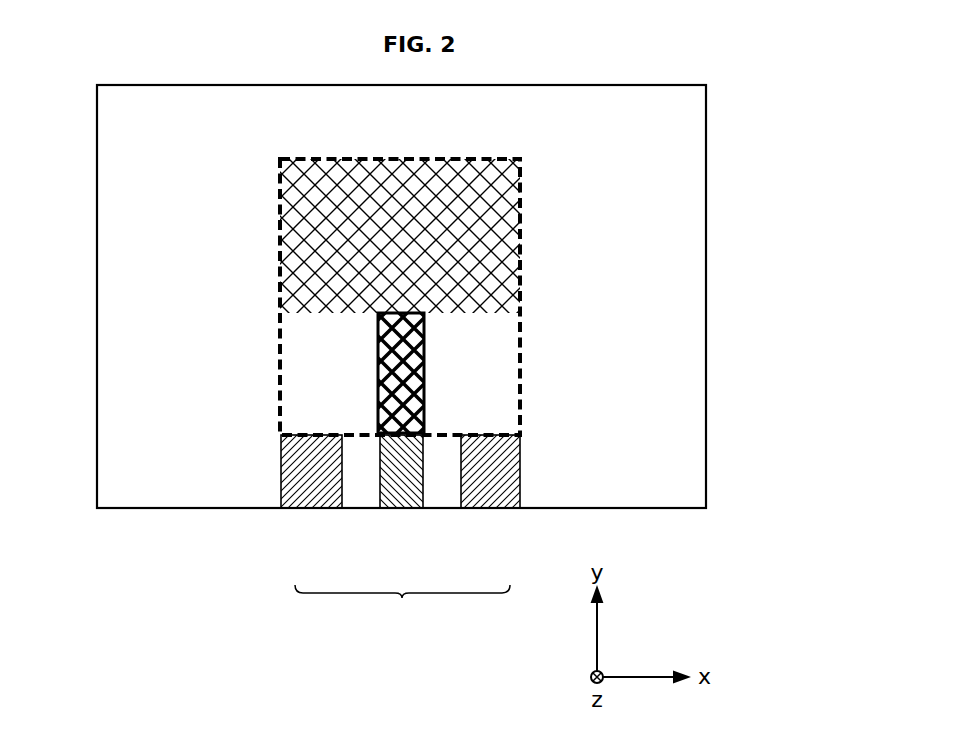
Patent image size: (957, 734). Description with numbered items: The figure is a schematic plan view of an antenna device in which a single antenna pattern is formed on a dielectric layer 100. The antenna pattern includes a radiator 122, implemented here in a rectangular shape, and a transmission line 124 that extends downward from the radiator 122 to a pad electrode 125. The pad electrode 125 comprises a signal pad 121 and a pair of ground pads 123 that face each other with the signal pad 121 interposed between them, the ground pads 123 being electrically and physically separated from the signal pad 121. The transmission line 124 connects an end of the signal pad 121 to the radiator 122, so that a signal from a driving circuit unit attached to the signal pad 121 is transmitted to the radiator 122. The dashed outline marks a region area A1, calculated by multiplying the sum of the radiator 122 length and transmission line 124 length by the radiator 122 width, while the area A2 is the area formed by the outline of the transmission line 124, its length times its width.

The dielectric layer 100 is at (693, 473).
The signal pad 121 is at (398, 496).
The radiator 122 is at (497, 228).
The ground pad 123 is at (313, 496).
The transmission line 124 is at (410, 377).
The pad electrode 125 is at (402, 609).
The region area A1 is at (280, 352).
The area of the transmission line A2 is at (378, 415).